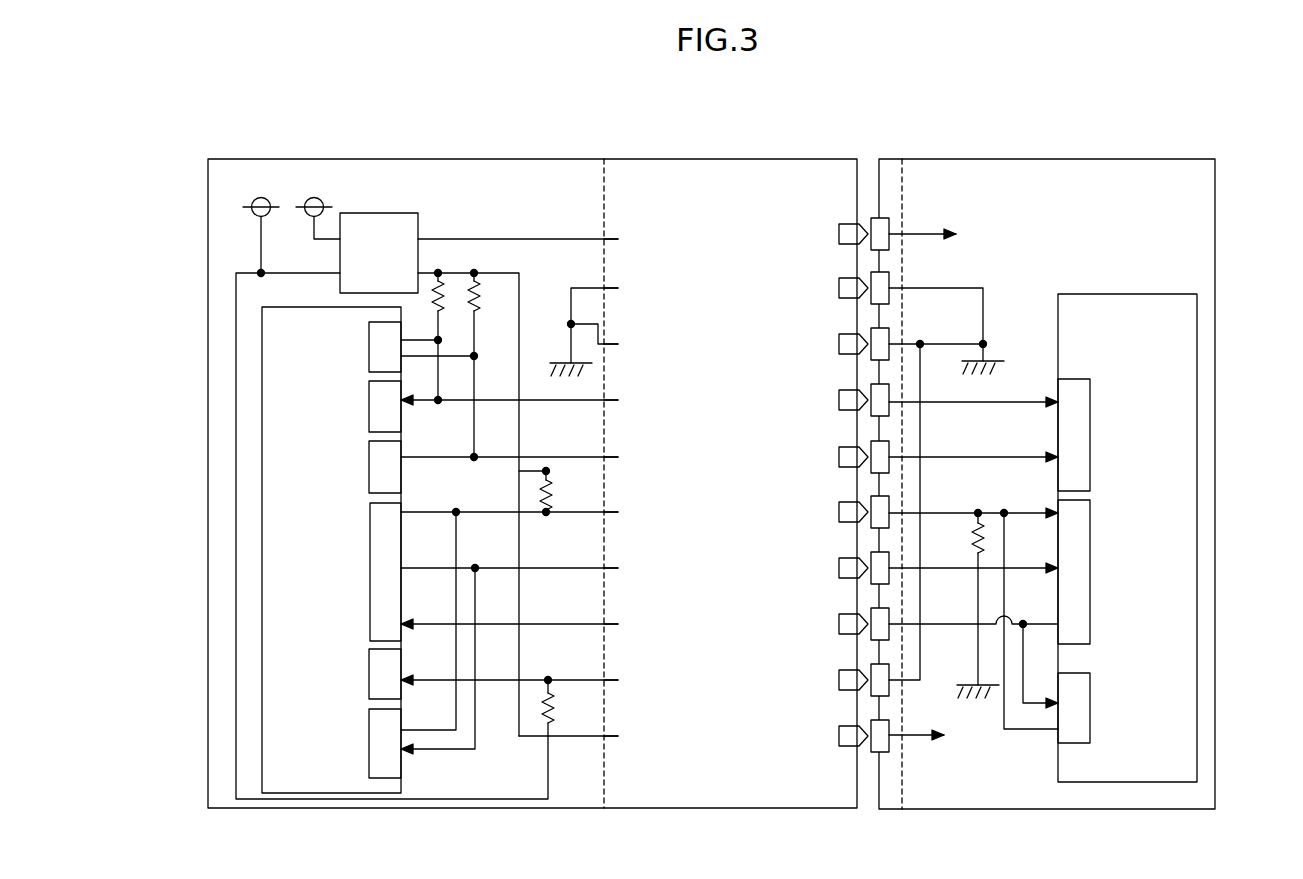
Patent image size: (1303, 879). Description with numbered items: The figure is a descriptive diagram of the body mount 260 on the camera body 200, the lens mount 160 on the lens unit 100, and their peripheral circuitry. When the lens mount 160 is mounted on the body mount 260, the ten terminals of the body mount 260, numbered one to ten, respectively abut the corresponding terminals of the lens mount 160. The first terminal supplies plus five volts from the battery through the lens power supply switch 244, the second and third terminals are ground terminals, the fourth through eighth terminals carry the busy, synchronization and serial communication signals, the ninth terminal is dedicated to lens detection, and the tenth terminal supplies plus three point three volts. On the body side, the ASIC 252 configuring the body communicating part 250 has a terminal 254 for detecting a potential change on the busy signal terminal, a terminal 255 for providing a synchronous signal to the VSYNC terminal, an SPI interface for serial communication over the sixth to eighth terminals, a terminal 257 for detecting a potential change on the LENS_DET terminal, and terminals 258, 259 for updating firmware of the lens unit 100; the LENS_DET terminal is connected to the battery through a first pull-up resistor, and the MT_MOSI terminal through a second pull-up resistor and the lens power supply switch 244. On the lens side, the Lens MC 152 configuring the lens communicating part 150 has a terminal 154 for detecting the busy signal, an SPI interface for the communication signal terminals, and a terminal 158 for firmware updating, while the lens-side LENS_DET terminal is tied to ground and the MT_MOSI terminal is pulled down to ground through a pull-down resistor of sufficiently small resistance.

The lens unit 100 is at (1058, 122).
The lens communicating part 150 is at (1167, 212).
The Lens MC 152 is at (1196, 545).
The terminal 154 is at (1089, 432).
The terminal 158 is at (1089, 707).
The lens mount 160 is at (891, 195).
The camera body 200 is at (498, 122).
The lens power supply switch 244 is at (377, 212).
The body communicating part 250 is at (228, 247).
The ASIC 252 is at (278, 541).
The terminal 254 is at (368, 405).
The terminal 255 is at (368, 464).
The terminal 257 is at (368, 676).
The terminal 258 is at (368, 743).
The terminal 259 is at (368, 347).
The body mount 260 is at (632, 212).